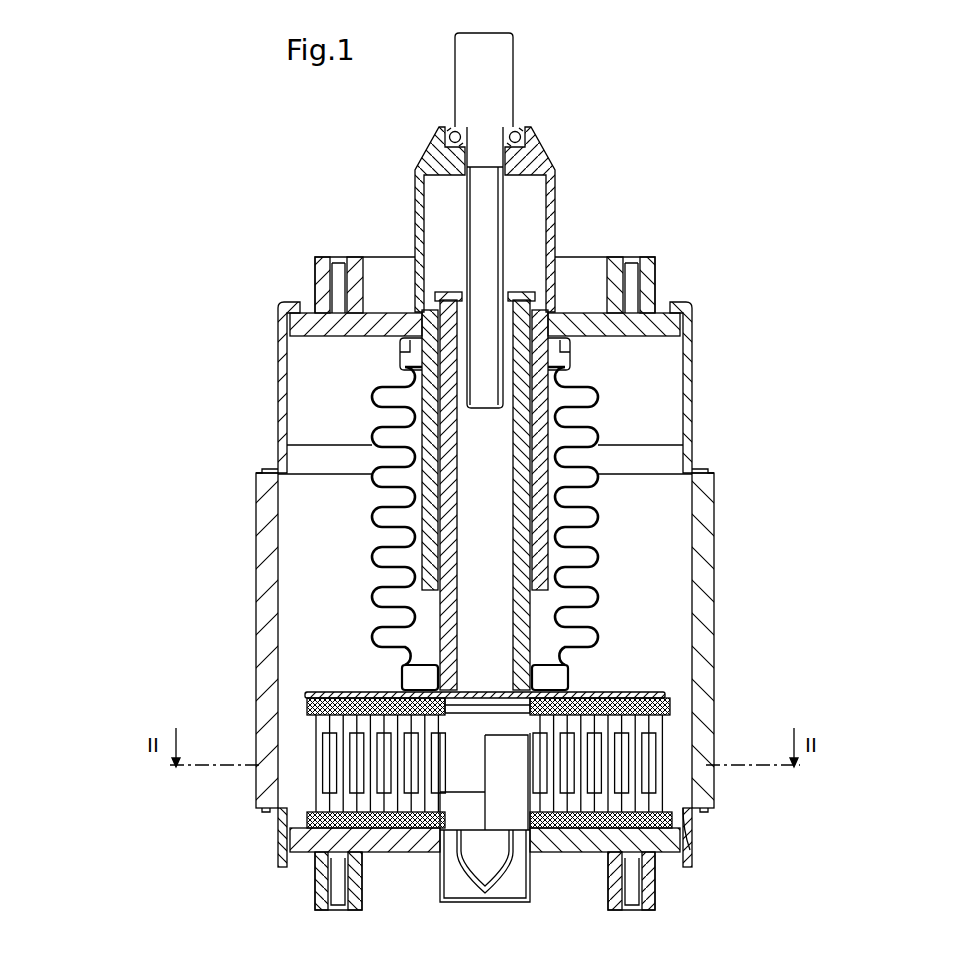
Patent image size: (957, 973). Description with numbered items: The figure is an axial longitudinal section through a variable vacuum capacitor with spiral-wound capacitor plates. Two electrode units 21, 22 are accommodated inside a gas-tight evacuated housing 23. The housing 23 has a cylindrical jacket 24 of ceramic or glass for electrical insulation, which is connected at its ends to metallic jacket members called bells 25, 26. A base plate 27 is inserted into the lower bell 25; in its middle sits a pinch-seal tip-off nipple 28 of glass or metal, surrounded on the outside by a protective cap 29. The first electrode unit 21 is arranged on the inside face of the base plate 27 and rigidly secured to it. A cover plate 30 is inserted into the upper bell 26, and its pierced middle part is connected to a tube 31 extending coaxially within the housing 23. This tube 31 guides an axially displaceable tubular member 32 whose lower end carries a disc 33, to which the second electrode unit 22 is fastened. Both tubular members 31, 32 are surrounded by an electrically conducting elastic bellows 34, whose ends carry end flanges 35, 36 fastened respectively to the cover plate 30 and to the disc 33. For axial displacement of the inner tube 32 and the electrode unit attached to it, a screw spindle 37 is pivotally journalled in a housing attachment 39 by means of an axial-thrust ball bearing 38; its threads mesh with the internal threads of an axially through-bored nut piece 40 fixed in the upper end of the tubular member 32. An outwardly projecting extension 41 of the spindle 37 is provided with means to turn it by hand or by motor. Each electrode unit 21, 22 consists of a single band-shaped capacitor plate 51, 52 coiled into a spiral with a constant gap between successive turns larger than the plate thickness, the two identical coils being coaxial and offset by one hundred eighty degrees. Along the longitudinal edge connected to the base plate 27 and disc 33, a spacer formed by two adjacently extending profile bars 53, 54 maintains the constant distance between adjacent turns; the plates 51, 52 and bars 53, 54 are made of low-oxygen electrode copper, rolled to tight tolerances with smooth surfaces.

The electrode unit 21 is at (308, 797).
The second electrode unit 22 is at (304, 721).
The housing 23 is at (248, 595).
The cylindrical jacket 24 is at (258, 546).
The bell 25 is at (278, 820).
The bell 26 is at (281, 388).
The base plate 27 is at (563, 848).
The tip-off nipple 28 is at (469, 882).
The protective cap 29 is at (502, 903).
The cover plate 30 is at (308, 323).
The tube 31 is at (432, 553).
The tubular member 32 is at (446, 637).
The disc 33 is at (356, 692).
The bellows 34 is at (588, 428).
The end flange 35 is at (568, 345).
The end flange 36 is at (545, 691).
The screw spindle 37 is at (483, 214).
The axial-thrust ball bearing 38 is at (527, 127).
The housing attachment 39 is at (553, 160).
The nut piece 40 is at (461, 306).
The extension 41 is at (497, 66).
The capacitor plate 51 is at (673, 796).
The capacitor plate 52 is at (312, 752).
The profile bar 53 is at (401, 830).
The profile bar 54 is at (397, 830).